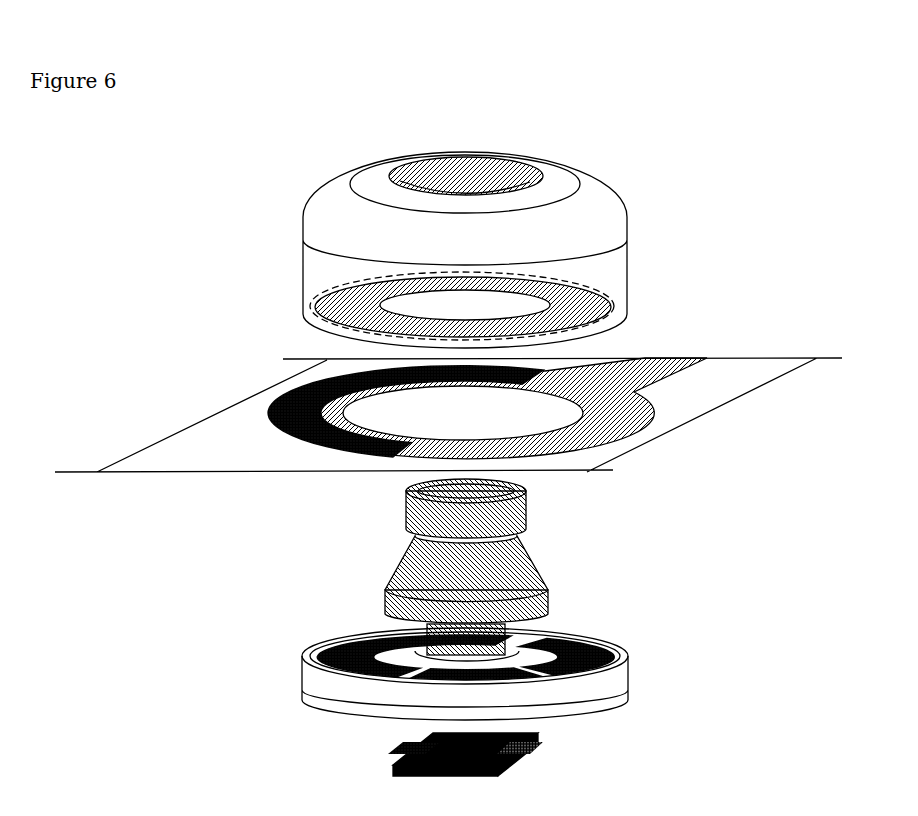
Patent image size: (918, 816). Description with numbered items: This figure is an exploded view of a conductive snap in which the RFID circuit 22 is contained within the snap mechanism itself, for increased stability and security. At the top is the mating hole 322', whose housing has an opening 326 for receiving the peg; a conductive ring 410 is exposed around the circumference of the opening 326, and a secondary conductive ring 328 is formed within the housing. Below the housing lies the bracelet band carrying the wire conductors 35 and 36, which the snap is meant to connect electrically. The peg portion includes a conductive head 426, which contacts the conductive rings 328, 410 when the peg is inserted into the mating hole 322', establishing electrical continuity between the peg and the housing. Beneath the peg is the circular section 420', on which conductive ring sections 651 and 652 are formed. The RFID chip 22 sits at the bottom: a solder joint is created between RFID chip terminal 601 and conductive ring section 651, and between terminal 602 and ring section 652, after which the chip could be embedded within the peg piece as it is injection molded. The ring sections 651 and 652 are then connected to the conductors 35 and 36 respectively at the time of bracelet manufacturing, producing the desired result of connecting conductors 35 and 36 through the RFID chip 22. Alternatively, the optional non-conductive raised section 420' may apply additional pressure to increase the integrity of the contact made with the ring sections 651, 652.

The RFID circuit 22 is at (427, 779).
The wire conductor 35 is at (293, 395).
The wire conductor 36 is at (633, 432).
The mating hole 322' is at (523, 250).
The opening 326 is at (465, 305).
The secondary conductive ring 328 is at (525, 173).
The conductive ring 410 is at (602, 314).
The circular section 420' is at (513, 674).
The conductive head 426 is at (525, 518).
The RFID chip terminal 601 is at (533, 749).
The terminal 602 is at (407, 747).
The conductive ring section 651 is at (340, 634).
The conductive ring section 652 is at (607, 641).